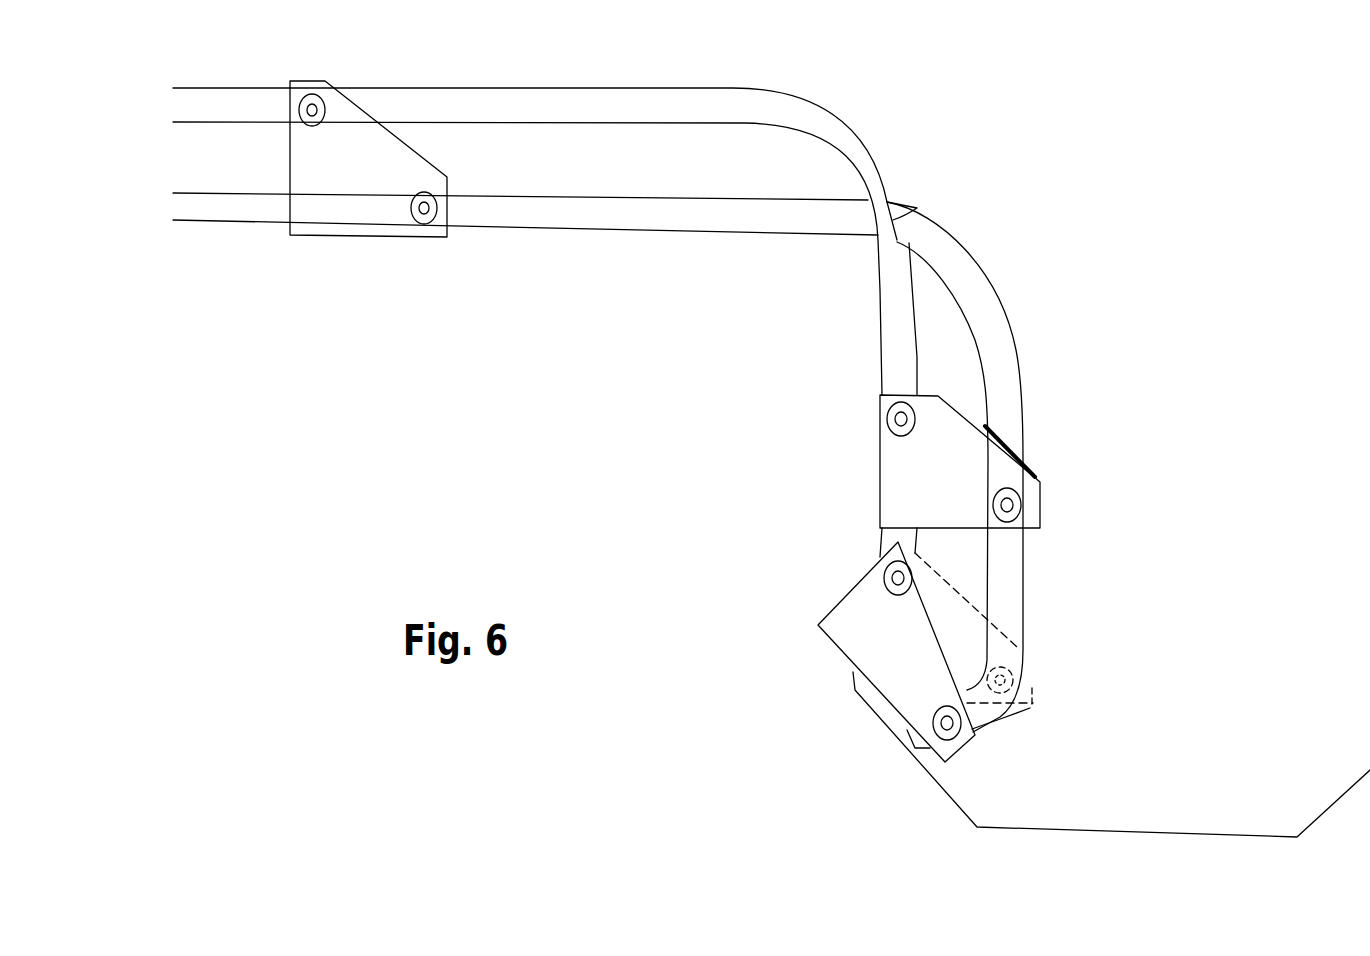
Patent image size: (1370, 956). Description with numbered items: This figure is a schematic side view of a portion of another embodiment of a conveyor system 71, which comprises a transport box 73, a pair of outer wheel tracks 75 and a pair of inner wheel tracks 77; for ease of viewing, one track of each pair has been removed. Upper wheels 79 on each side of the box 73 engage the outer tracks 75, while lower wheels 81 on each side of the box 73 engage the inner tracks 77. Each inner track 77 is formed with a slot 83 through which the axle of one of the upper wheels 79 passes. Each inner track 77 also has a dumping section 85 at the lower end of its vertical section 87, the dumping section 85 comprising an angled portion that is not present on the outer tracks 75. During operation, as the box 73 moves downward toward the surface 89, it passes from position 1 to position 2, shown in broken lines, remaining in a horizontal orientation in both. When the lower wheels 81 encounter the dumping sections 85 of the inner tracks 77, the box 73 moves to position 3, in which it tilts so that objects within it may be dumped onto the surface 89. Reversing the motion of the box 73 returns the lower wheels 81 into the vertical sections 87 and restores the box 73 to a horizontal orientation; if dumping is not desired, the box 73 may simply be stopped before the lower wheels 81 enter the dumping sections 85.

The conveyor system 71 is at (598, 413).
The transport box 73 is at (338, 222).
The outer wheel tracks 75 is at (857, 157).
The inner wheel tracks 77 is at (998, 350).
The upper wheels 79 is at (303, 122).
The lower wheels 81 is at (417, 223).
The slot 83 is at (907, 210).
The dumping section 85 is at (1000, 718).
The vertical section 87 is at (1013, 437).
The surface 89 is at (1197, 832).
The position 1 is at (1033, 500).
The position 2 is at (1030, 652).
The position 3 is at (830, 648).